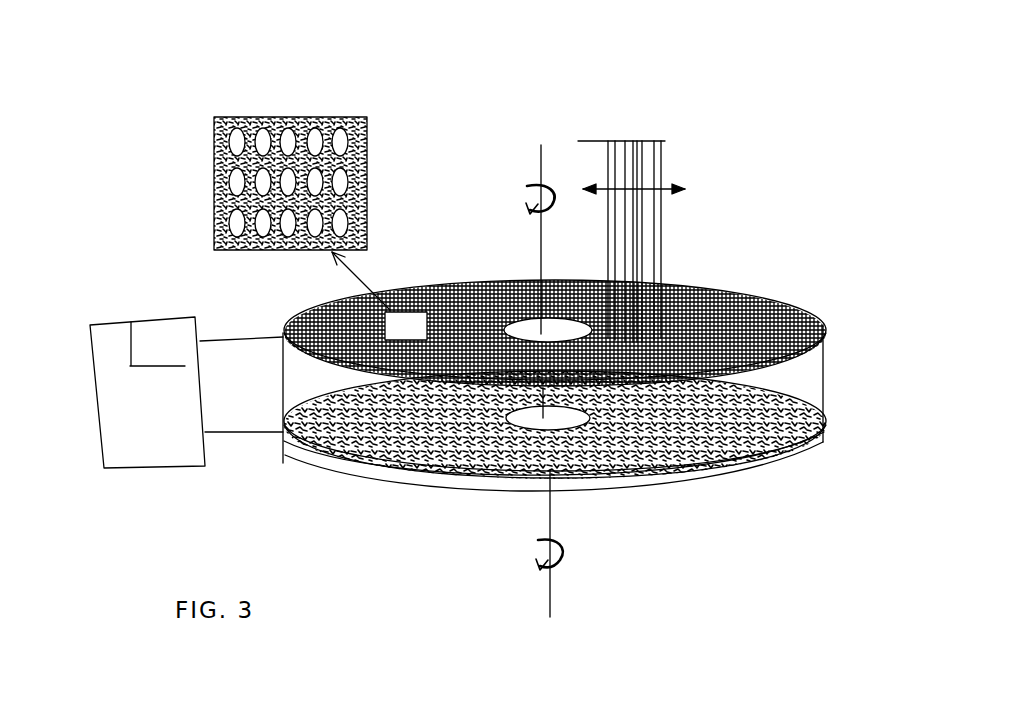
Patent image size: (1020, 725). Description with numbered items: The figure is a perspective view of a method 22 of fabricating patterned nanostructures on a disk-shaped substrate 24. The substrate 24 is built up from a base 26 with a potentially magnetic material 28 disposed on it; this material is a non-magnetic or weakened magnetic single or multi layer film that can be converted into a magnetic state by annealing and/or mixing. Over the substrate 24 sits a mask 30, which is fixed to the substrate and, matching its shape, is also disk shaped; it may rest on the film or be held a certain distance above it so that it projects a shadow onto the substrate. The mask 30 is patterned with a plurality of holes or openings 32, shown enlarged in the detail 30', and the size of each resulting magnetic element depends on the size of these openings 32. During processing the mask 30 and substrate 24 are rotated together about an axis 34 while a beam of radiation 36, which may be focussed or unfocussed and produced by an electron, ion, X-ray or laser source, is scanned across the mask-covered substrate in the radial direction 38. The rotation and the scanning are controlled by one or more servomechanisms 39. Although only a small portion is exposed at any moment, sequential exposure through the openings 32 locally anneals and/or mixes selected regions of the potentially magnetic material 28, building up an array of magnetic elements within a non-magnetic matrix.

The method of fabricating patterned nanostructures 22 is at (440, 68).
The substrate 24 is at (715, 460).
The base 26 is at (800, 450).
The potentially magnetic material 28 is at (822, 396).
The mask 30 is at (600, 328).
The enlarged detail of second layer 30' is at (247, 213).
The holes or openings 32 is at (255, 116).
The axis 34 is at (556, 600).
The beam of radiation 36 is at (645, 153).
The radial direction 38 is at (674, 197).
The servomechanisms 39 is at (117, 400).